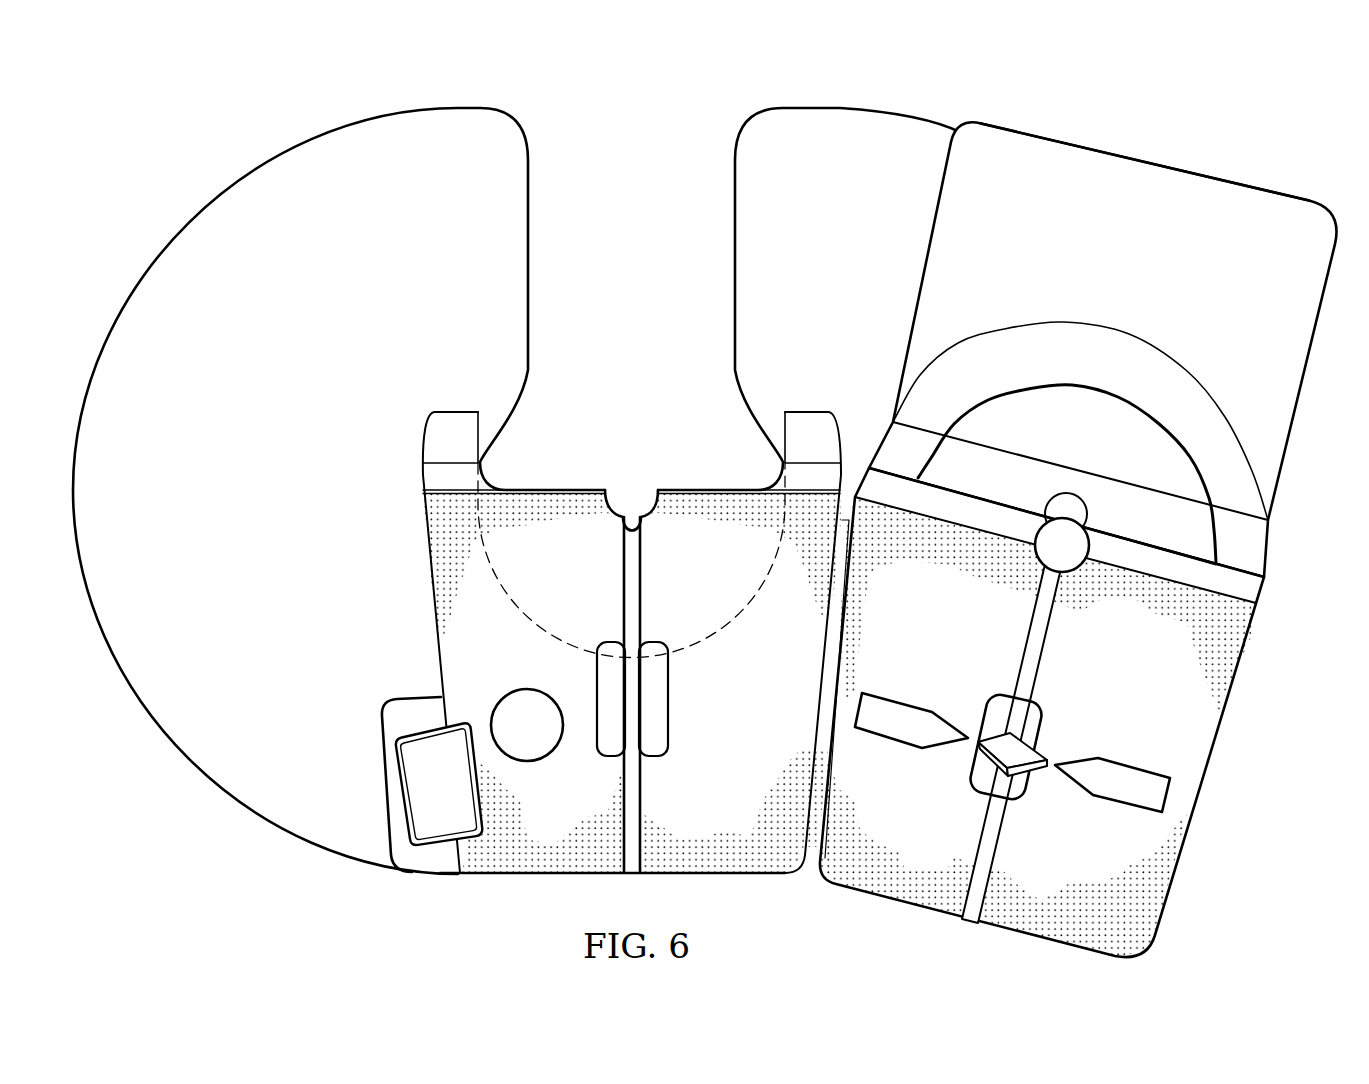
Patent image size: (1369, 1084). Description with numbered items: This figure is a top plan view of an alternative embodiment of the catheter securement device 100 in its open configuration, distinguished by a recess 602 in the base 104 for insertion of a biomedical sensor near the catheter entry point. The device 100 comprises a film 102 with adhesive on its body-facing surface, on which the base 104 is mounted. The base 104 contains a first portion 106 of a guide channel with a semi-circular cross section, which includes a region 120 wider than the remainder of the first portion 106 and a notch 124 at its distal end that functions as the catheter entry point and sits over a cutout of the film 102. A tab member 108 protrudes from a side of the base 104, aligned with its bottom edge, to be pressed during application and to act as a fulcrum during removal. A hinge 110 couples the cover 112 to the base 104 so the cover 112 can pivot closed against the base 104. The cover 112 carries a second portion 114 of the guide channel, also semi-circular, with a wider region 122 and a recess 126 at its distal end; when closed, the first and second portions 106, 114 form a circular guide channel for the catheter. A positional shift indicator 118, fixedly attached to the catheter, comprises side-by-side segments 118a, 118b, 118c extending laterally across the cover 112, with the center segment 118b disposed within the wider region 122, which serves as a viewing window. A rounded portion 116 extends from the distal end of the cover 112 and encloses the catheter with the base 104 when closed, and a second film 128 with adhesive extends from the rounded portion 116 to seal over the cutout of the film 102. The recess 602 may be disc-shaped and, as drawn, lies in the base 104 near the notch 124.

The device 100 is at (246, 98).
The film 102 is at (424, 107).
The base 104 is at (376, 558).
The first portion of the guide channel 106 is at (641, 592).
The tab member 108 is at (380, 789).
The hinge 110 is at (843, 592).
The cover 112 is at (1103, 333).
The second portion of the guide channel 114 is at (1042, 637).
The rounded portion 116 is at (1121, 329).
The positional shift indicator 118 is at (1020, 746).
The segment 118a is at (905, 703).
The center segment 118b is at (1025, 771).
The segment 118c is at (1151, 769).
The region 120 is at (600, 668).
The region 122 is at (999, 694).
The notch 124 is at (628, 485).
The recess 126 is at (1035, 550).
The second film 128 is at (1148, 163).
The recess 602 is at (521, 694).